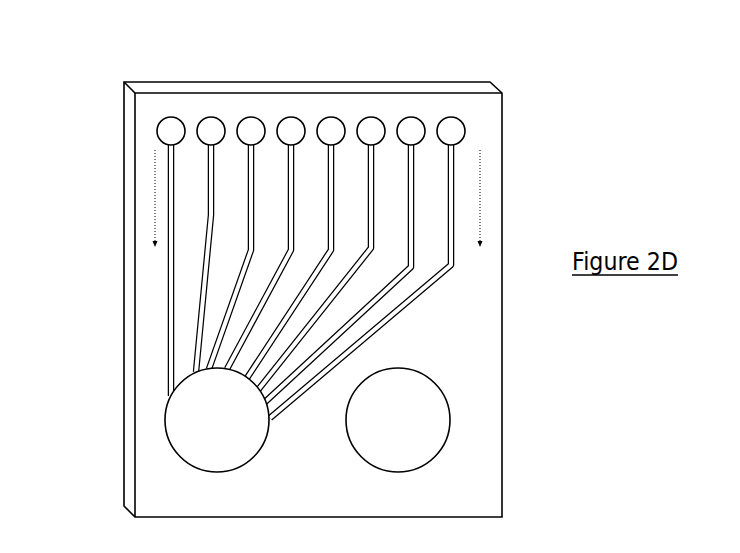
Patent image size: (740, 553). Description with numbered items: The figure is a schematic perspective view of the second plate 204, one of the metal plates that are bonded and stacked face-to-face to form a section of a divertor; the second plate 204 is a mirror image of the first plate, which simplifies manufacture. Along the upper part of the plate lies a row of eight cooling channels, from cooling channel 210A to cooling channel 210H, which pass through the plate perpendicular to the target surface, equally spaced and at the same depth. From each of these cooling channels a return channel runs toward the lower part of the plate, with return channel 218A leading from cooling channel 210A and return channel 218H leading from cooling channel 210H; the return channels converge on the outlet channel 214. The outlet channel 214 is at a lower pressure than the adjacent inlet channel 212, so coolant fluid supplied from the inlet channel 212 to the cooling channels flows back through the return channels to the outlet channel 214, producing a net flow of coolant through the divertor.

The second plate 204 is at (103, 92).
The cooling channel 210A is at (171, 130).
The cooling channel 210H is at (452, 130).
The return channel 218A is at (170, 284).
The return channel 218H is at (457, 180).
The outlet channel 214 is at (212, 420).
The inlet channel 212 is at (385, 423).